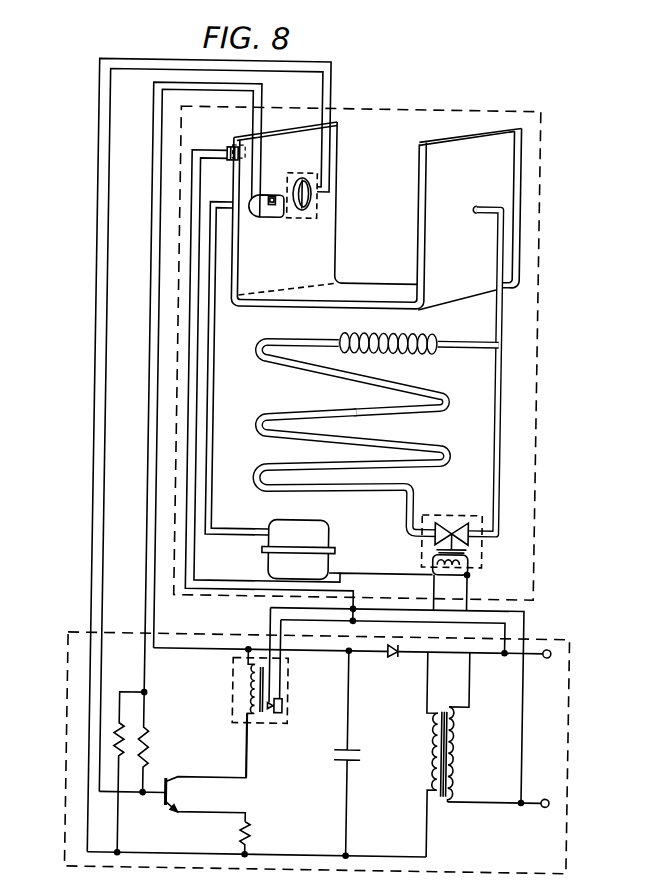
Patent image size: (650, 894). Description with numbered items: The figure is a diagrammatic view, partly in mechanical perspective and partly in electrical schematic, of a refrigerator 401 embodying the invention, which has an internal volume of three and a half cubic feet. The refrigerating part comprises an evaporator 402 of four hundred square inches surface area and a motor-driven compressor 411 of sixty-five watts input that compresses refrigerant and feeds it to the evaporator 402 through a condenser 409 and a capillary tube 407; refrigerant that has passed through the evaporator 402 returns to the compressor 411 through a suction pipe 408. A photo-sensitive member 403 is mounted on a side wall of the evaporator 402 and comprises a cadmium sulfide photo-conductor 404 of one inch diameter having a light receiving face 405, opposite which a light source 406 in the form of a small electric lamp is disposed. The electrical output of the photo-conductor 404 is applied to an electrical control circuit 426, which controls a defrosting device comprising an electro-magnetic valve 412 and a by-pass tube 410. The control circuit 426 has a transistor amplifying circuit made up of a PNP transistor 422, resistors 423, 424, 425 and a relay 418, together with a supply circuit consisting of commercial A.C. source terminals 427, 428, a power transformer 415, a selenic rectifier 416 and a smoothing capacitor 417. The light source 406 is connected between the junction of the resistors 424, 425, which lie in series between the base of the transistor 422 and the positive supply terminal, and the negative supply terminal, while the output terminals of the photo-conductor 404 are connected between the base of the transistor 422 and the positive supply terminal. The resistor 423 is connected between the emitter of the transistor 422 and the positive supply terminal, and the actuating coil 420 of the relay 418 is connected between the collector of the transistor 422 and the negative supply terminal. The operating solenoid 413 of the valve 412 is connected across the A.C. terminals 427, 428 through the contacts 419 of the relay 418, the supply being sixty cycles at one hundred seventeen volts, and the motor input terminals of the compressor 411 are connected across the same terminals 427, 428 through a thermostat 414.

The refrigerator 401 is at (403, 111).
The evaporator 402 is at (368, 292).
The photo-sensitive member 403 is at (291, 176).
The photo-conductor 404 is at (313, 202).
The light receiving face 405 is at (301, 208).
The light source 406 is at (266, 208).
The capillary tube 407 is at (428, 355).
The suction pipe 408 is at (214, 385).
The condenser 409 is at (420, 439).
The by-pass tube 410 is at (503, 442).
The motor-driven compressor 411 is at (281, 529).
The electro-magnetic valve 412 is at (451, 513).
The operating solenoid 413 is at (470, 558).
The thermostat 414 is at (224, 149).
The power transformer 415 is at (444, 798).
The selenic rectifier 416 is at (390, 657).
The smoothing capacitor 417 is at (353, 767).
The relay 418 is at (292, 693).
The relay contacts 419 is at (274, 718).
The actuating coil 420 is at (246, 688).
The PNP transistor 422 is at (166, 803).
The resistor 423 is at (258, 836).
The resistor 424 is at (148, 746).
The resistor 425 is at (114, 726).
The electrical control circuit 426 is at (74, 802).
The A.C. electrical source terminal 427 is at (550, 654).
The A.C. electrical source terminal 428 is at (550, 796).